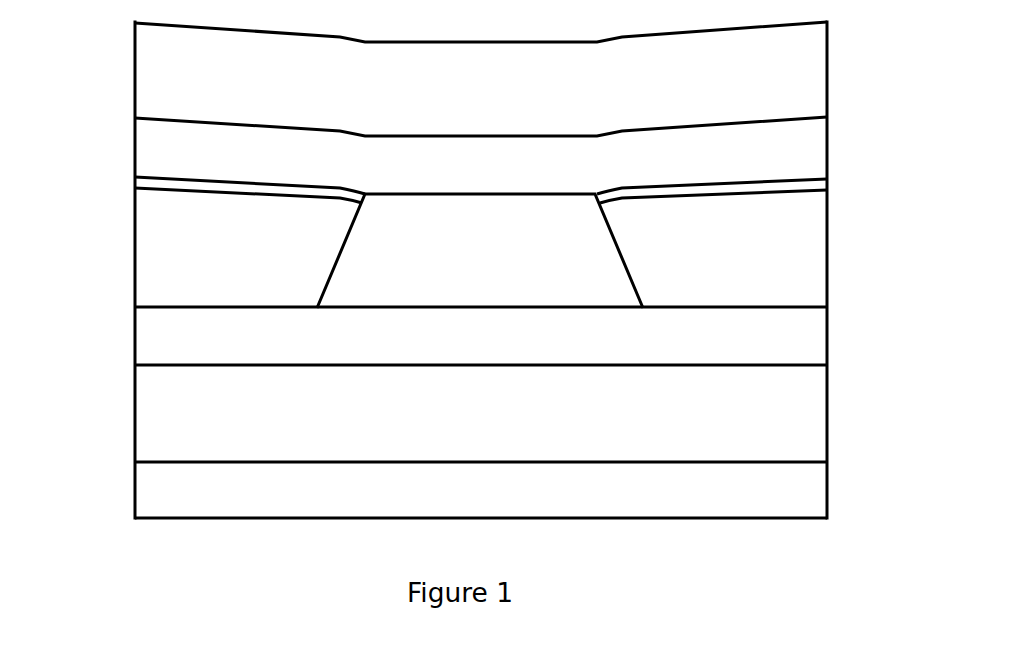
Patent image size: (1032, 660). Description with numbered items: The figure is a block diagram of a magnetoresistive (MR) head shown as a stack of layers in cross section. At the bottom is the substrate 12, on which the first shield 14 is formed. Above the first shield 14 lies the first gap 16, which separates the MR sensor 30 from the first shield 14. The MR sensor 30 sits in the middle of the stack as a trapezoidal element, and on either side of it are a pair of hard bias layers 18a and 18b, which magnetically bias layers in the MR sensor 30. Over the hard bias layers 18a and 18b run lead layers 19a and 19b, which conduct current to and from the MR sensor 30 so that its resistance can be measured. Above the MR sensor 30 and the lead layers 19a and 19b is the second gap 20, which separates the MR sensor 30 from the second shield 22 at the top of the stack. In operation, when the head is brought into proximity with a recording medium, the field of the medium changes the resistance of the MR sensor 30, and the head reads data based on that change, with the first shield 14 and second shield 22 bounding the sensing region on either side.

The substrate 12 is at (827, 478).
The first shield 14 is at (827, 402).
The first gap 16 is at (827, 336).
The hard bias layer 18a is at (135, 233).
The hard bias layer 18b is at (827, 250).
The lead layer 19a is at (135, 178).
The lead layer 19b is at (827, 180).
The second gap 20 is at (827, 137).
The second shield 22 is at (827, 50).
The MR sensor 30 is at (340, 248).